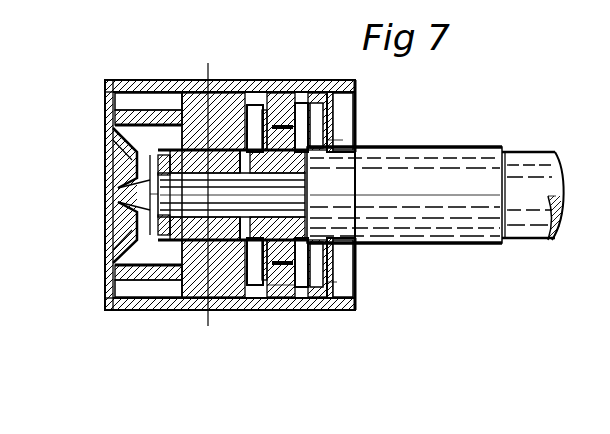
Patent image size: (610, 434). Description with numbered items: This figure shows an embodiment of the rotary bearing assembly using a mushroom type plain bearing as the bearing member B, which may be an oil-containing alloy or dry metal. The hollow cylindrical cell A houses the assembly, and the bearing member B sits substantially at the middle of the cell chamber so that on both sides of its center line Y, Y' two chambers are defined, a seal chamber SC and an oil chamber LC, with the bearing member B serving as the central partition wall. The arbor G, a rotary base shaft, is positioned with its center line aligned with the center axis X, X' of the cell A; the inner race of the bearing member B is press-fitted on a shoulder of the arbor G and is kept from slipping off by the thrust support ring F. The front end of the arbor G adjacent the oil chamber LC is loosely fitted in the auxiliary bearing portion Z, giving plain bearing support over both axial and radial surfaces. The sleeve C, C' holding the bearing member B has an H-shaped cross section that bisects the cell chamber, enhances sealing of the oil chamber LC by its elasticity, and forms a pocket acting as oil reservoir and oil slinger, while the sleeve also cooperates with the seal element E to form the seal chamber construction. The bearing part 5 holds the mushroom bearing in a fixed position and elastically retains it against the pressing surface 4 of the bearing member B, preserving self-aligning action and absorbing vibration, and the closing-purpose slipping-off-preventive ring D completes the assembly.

The cell A is at (110, 102).
The oil chamber LC is at (146, 136).
The bearing member B is at (140, 162).
The auxiliary bearing portion Z is at (122, 188).
The center axis X is at (110, 201).
The thrust support ring F is at (160, 218).
The bearing part 5 is at (187, 248).
The center line Y is at (206, 175).
The center line Y' is at (206, 328).
The sleeve C is at (254, 169).
The seal chamber SC is at (252, 118).
The pressing surface 4 is at (237, 225).
The sleeve C' is at (289, 316).
The seal element E is at (343, 140).
The closing-purpose slipping-off-preventive ring D is at (337, 282).
The arbor G is at (446, 152).
The center axis X' is at (569, 199).